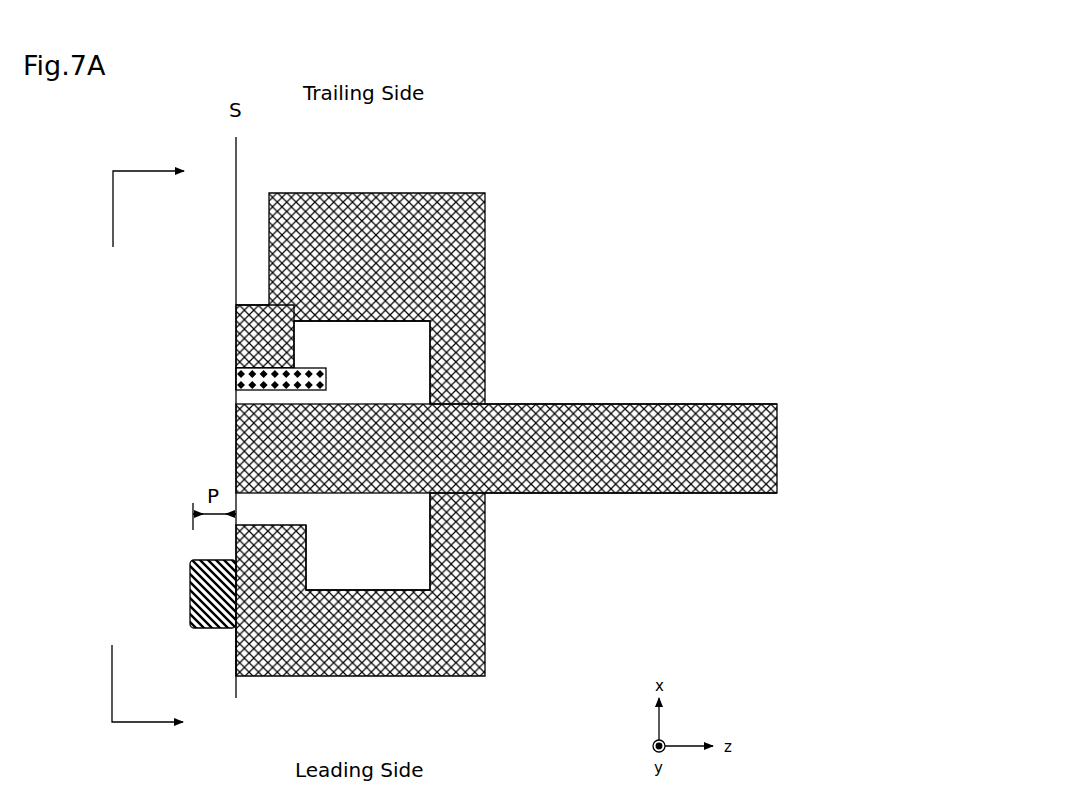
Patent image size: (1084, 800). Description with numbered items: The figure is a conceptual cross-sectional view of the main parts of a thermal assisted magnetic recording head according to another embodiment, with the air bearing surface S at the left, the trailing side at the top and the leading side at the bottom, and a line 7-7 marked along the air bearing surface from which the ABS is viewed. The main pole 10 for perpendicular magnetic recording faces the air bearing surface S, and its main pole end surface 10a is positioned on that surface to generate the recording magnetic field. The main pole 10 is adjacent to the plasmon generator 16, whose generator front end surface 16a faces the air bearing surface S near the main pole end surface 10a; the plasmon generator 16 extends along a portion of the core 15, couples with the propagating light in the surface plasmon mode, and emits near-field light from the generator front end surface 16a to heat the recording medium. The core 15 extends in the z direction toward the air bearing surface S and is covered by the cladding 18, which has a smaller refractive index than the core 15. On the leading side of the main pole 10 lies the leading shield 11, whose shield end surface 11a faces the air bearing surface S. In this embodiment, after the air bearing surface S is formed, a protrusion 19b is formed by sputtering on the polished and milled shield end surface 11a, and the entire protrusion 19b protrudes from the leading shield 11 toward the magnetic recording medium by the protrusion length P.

The line 7- 7 is at (162, 448).
The main pole 10 is at (390, 193).
The main pole end surface 10a is at (235, 337).
The leading shield 11 is at (350, 677).
The shield end surface 11a is at (233, 650).
The core 15 is at (577, 404).
The plasmon generator 16 is at (327, 374).
The generator front end surface 16a is at (235, 378).
The cladding 18 is at (375, 530).
The protrusion 19b is at (210, 558).